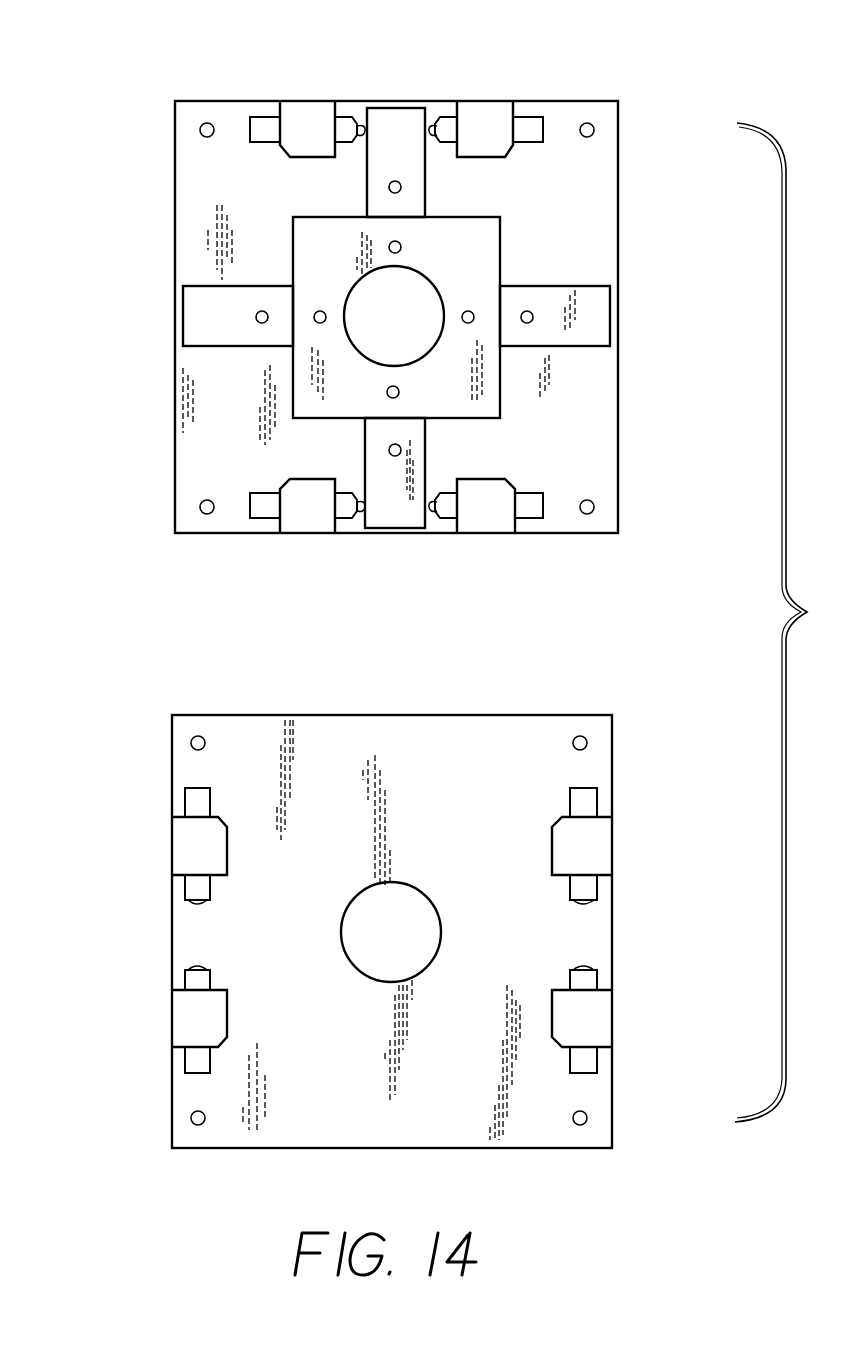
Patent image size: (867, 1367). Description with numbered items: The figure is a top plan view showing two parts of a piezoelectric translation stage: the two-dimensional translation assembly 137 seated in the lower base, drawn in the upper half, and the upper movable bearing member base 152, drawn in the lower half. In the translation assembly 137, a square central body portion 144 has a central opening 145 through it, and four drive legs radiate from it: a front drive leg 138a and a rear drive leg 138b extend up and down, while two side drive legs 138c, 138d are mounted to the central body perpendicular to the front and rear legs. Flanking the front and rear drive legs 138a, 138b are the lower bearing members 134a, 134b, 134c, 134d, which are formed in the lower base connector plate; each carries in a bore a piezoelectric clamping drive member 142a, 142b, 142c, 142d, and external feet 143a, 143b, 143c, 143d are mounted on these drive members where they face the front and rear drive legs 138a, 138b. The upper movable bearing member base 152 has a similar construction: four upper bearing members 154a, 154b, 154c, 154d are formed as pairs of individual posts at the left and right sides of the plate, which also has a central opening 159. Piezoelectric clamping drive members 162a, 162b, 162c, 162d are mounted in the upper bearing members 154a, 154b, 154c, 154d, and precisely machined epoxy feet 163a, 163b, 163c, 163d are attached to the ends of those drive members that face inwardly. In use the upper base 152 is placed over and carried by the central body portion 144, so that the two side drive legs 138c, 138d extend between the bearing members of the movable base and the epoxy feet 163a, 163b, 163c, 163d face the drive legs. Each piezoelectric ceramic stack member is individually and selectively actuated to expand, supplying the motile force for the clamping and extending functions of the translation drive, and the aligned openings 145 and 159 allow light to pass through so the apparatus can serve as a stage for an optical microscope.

The two-dimensional translation assembly 137 is at (648, 277).
The central body portion 144 is at (490, 263).
The central opening 145 is at (408, 288).
The front drive leg 138a is at (400, 120).
The rear drive leg 138b is at (389, 513).
The side drive leg 138c is at (205, 320).
The side drive leg 138d is at (595, 322).
The lower bearing member 134a is at (313, 113).
The lower bearing member 134b is at (489, 113).
The lower bearing member 134c is at (305, 515).
The lower bearing member 134d is at (497, 532).
The piezoelectric clamping drive member 142a is at (258, 133).
The piezoelectric clamping drive member 142b is at (533, 135).
The piezoelectric clamping drive member 142c is at (258, 498).
The piezoelectric clamping drive member 142d is at (538, 503).
The external foot 143a is at (358, 136).
The external foot 143b is at (440, 137).
The external foot 143c is at (352, 522).
The external foot 143d is at (438, 500).
The upper movable bearing member base 152 is at (501, 732).
The central opening 159 is at (403, 905).
The upper bearing member 154a is at (195, 853).
The upper bearing member 154b is at (185, 1030).
The upper bearing member 154c is at (592, 843).
The upper bearing member 154d is at (587, 1028).
The piezoelectric clamping drive member 162a is at (193, 808).
The piezoelectric clamping drive member 162b is at (185, 982).
The piezoelectric clamping drive member 162c is at (583, 802).
The piezoelectric clamping drive member 162d is at (590, 982).
The epoxy foot 163a is at (197, 902).
The epoxy foot 163b is at (203, 967).
The epoxy foot 163c is at (580, 902).
The epoxy foot 163d is at (583, 966).